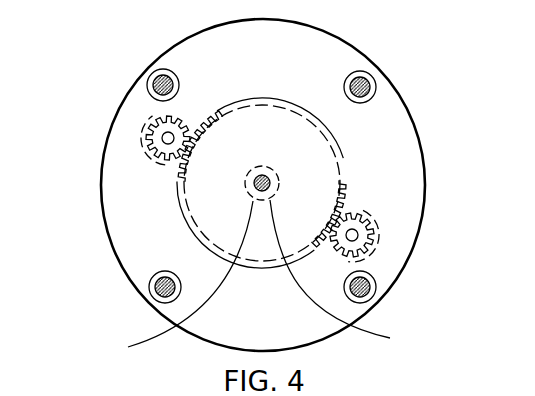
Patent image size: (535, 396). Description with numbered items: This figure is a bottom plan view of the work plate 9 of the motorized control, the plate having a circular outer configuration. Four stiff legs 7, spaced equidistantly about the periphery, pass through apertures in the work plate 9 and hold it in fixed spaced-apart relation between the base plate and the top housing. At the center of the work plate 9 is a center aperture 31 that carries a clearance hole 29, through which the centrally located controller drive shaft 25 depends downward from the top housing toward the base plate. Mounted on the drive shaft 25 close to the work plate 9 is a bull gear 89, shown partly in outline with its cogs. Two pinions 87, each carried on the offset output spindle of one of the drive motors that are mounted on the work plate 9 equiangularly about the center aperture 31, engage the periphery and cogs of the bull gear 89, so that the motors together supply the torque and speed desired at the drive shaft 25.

The legs 7 is at (155, 82).
The work plate 9 is at (110, 157).
The controller drive shaft 25 is at (270, 170).
The clearance hole 29 is at (345, 276).
The center aperture 31 is at (175, 281).
The pinion 87 is at (157, 128).
The bull gear 89 is at (335, 157).